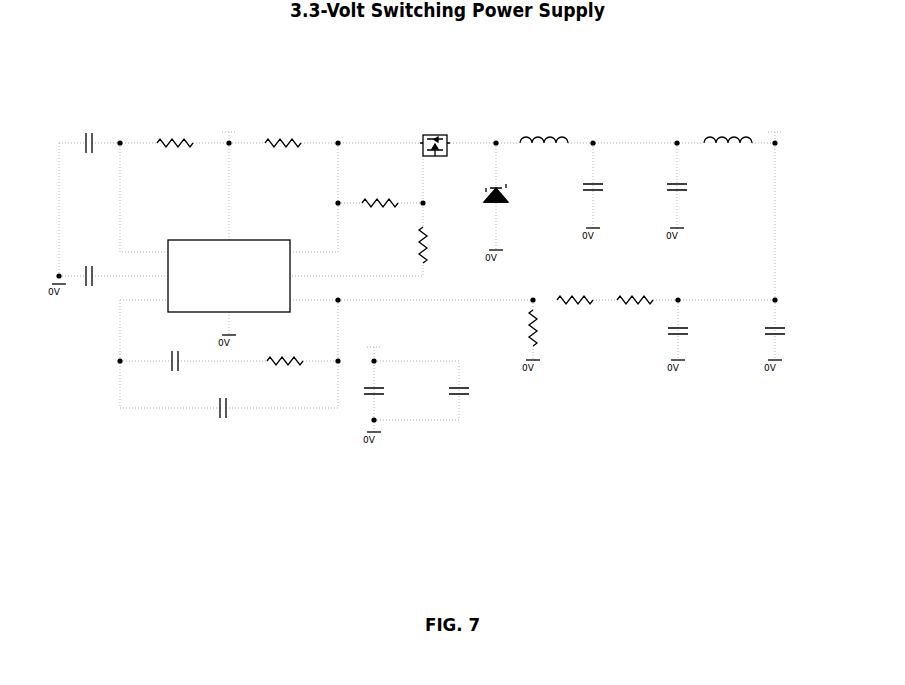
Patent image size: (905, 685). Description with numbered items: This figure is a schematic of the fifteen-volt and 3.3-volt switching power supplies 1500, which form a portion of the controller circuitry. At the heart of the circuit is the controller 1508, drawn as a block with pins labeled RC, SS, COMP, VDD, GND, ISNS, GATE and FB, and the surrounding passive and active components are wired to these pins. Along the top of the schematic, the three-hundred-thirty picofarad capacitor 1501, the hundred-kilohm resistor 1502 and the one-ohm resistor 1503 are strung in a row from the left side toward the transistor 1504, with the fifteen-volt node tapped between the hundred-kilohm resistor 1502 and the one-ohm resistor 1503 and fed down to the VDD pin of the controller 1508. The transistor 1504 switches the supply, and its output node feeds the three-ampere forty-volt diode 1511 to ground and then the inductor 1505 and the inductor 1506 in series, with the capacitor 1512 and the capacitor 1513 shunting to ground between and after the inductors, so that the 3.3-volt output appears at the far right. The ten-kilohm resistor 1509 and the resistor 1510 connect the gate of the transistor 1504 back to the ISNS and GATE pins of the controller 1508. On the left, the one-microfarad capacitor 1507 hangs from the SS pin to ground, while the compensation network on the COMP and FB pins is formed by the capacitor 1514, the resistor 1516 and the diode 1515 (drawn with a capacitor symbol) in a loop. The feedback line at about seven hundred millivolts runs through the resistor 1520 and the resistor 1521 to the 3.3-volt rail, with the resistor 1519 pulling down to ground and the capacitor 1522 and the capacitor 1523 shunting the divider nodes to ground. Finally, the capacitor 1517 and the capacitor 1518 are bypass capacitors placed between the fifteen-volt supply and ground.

The switching power supplies 1500 is at (438, 236).
The 330 pF capacitor 1501 is at (89, 131).
The 100 k resistor 1502 is at (175, 134).
The 1 ohm resistor 1503 is at (283, 134).
The transistor 1504 is at (435, 145).
The inductor 1505 is at (544, 132).
The inductor 1506 is at (728, 132).
The 1 µF capacitor 1507 is at (88, 263).
The controller 1508 is at (229, 273).
The 10 k resistor 1509 is at (380, 194).
The 49.9 ohm resistor 1510 is at (443, 245).
The 3 A 40V diode 1511 is at (518, 205).
The 2.2 µF capacitor 1512 is at (615, 186).
The 2.2 µF capacitor 1513 is at (700, 186).
The 2200 pF capacitor 1514 is at (173, 348).
The diode 1515 is at (220, 396).
The 160 k resistor 1516 is at (285, 352).
The 0.1 µF capacitor 1517 is at (396, 393).
The 0.1 µF capacitor 1518 is at (481, 393).
The 2.43 k resistor 1519 is at (552, 328).
The 221 ohm resistor 1520 is at (575, 291).
The 8.87 k resistor 1521 is at (635, 291).
The 0.1 µF capacitor 1522 is at (699, 332).
The 2.2 µF capacitor 1523 is at (797, 332).